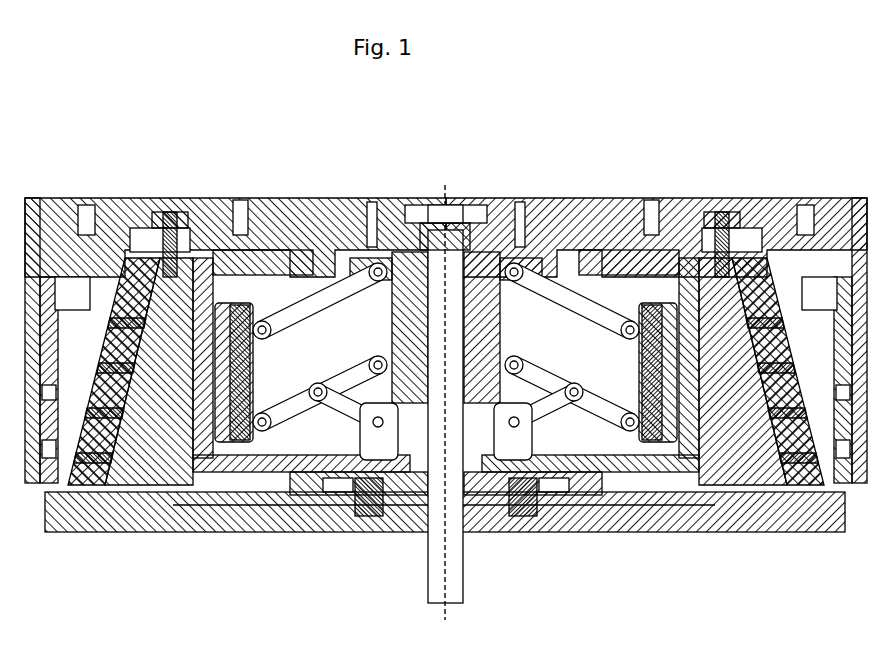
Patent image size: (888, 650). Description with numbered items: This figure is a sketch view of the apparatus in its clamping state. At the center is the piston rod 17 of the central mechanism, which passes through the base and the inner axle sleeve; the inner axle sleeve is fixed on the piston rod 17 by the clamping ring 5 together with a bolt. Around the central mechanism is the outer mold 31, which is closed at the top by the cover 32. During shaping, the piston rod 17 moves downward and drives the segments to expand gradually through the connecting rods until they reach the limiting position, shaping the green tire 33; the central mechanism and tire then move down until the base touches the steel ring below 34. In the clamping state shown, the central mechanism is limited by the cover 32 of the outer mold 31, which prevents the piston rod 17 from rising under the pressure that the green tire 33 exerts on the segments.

The outer mold 31 is at (147, 223).
The cover 32 is at (343, 198).
The clamping ring 5 is at (487, 198).
The green tire 33 is at (705, 197).
The steel ring below 34 is at (288, 510).
The piston rod 17 is at (453, 430).